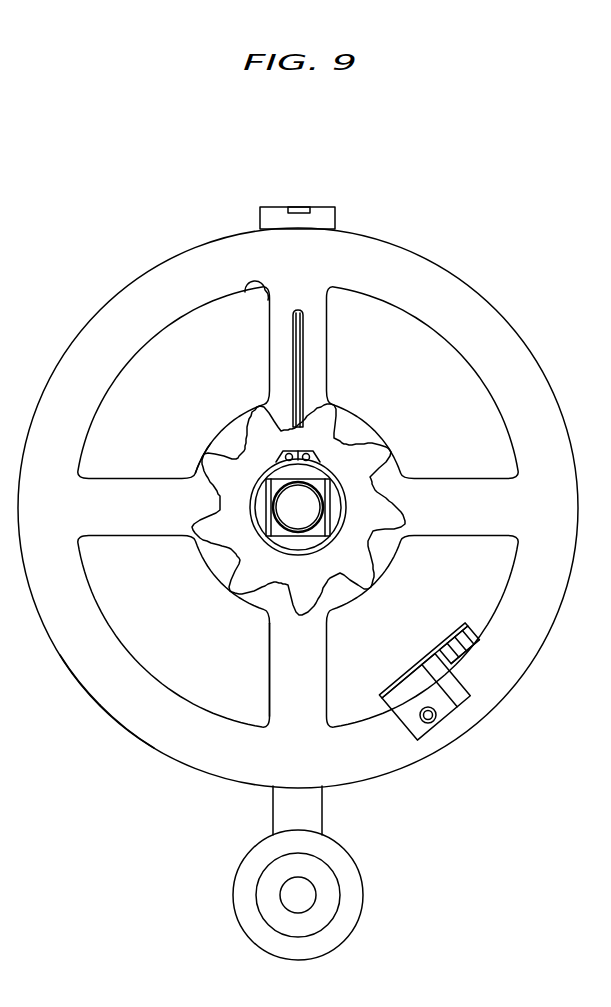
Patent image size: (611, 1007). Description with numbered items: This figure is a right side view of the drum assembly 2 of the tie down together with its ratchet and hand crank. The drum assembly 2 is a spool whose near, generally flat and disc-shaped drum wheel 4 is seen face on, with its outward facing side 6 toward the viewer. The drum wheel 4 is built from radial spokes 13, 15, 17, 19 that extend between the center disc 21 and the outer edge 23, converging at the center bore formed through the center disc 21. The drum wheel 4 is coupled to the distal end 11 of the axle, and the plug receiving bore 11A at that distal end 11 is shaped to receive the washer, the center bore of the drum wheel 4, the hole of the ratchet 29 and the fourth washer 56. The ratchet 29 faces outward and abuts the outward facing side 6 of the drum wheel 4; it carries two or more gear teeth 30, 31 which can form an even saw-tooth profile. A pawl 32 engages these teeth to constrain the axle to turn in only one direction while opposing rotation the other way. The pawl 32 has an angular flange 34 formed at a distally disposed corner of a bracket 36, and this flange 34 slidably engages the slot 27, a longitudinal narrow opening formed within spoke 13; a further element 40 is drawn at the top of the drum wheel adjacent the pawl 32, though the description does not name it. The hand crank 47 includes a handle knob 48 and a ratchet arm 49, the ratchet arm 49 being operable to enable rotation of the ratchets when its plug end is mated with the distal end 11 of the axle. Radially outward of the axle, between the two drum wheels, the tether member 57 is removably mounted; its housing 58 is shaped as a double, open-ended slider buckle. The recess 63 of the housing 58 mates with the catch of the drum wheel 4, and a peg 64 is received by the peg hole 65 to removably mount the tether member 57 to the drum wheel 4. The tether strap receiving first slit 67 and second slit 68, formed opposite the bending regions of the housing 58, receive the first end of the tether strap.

The drum assembly 2 is at (118, 208).
The drum wheel 4 is at (160, 755).
The outward facing side 6 is at (467, 360).
The distal end 11 is at (336, 480).
The plug receiving bore 11A is at (297, 505).
The radial spoke 13 is at (270, 363).
The radial spoke 15 is at (452, 478).
The radial spoke 17 is at (270, 676).
The radial spoke 19 is at (136, 537).
The center disc 21 is at (200, 467).
The outer edge 23 is at (118, 726).
The slot 27 is at (305, 310).
The ratchet 29 is at (383, 518).
The gear tooth 30 is at (303, 398).
The gear tooth 31 is at (292, 424).
The pawl 32 is at (262, 165).
The angular flange 34 is at (305, 350).
The bracket 36 is at (248, 300).
The latch housing 40 is at (336, 218).
The hand crank 47 is at (412, 862).
The handle knob 48 is at (238, 870).
The ratchet arm 49 is at (308, 821).
The fourth washer 56 is at (262, 500).
The tether member 57 is at (408, 652).
The housing 58 is at (467, 627).
The recess 63 is at (450, 668).
The peg 64 is at (437, 722).
The peg hole 65 is at (426, 725).
The tether strap receiving first slit 67 is at (458, 647).
The tether strap receiving second slit 68 is at (466, 664).